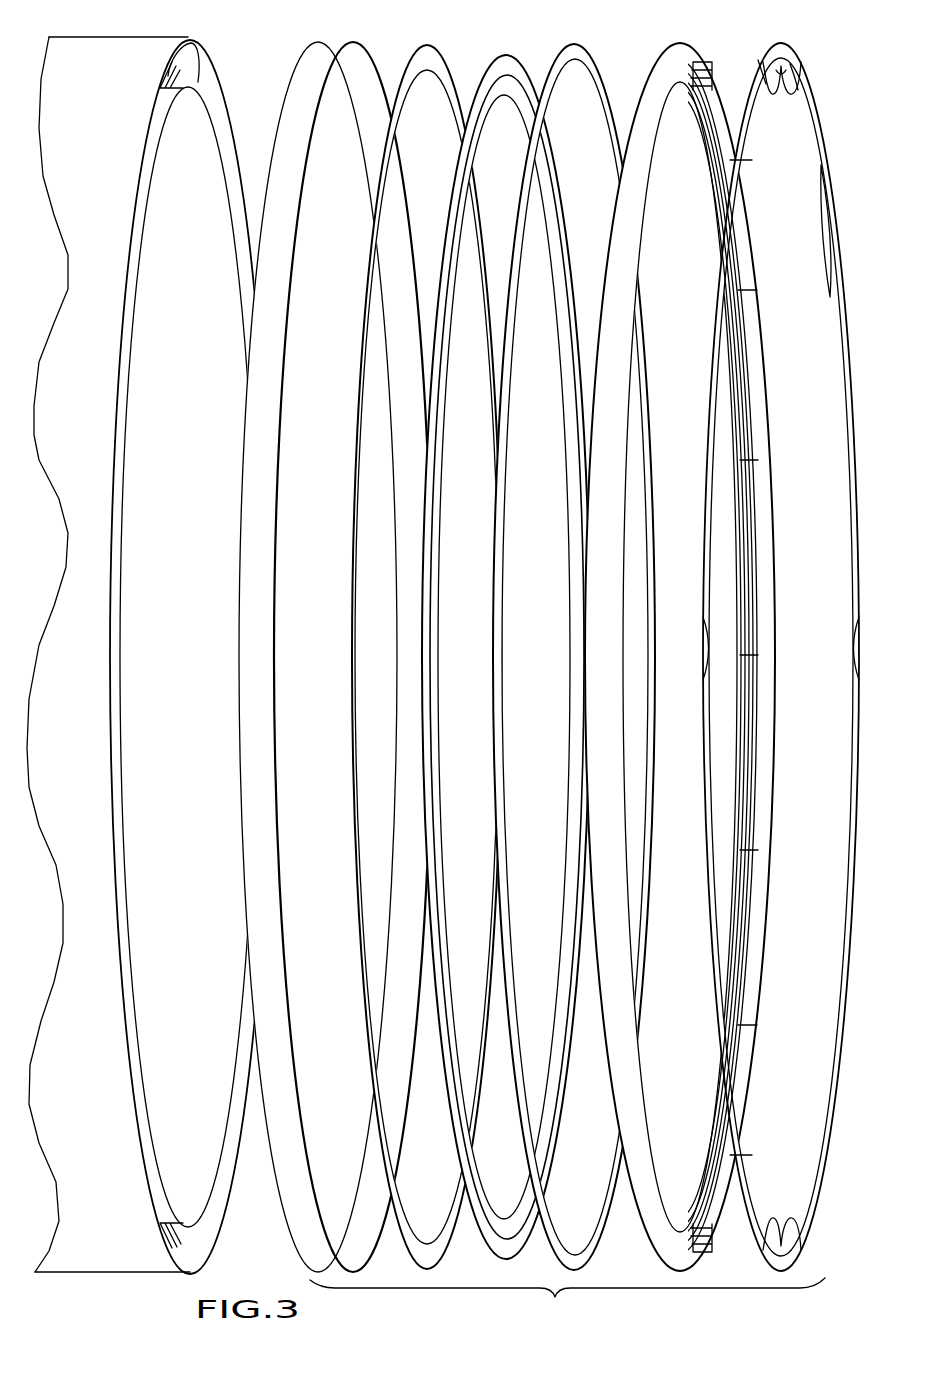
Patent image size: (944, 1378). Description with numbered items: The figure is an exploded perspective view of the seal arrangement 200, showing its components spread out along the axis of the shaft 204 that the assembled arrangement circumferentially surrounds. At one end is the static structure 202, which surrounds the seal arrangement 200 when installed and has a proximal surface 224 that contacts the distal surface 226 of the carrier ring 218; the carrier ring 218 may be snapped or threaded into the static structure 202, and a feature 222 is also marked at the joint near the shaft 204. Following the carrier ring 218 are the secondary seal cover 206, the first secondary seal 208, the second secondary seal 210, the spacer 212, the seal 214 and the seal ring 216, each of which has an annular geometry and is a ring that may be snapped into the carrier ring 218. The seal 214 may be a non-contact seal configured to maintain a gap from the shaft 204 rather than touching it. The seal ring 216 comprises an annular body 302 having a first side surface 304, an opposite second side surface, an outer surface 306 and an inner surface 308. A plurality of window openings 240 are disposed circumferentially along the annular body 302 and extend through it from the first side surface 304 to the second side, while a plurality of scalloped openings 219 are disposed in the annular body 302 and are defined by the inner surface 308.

The seal arrangement 200 is at (567, 1302).
The static structure 202 is at (114, 62).
The shaft 204 is at (194, 113).
The secondary seal cover 206 is at (442, 62).
The first secondary seal 208 is at (533, 76).
The second secondary seal 210 is at (505, 60).
The spacer 212 is at (602, 63).
The seal 214 is at (677, 48).
The seal ring 216 is at (806, 60).
The carrier ring 218 is at (300, 75).
The scalloped openings 219 is at (781, 90).
The seam loop 222 is at (186, 62).
The proximal surface 224 is at (202, 69).
The distal surface 226 is at (344, 44).
The window openings 240 is at (806, 79).
The annular body 302 is at (779, 48).
The first side surface 304 is at (748, 122).
The outer surface 306 is at (762, 66).
The inner surface 308 is at (830, 190).